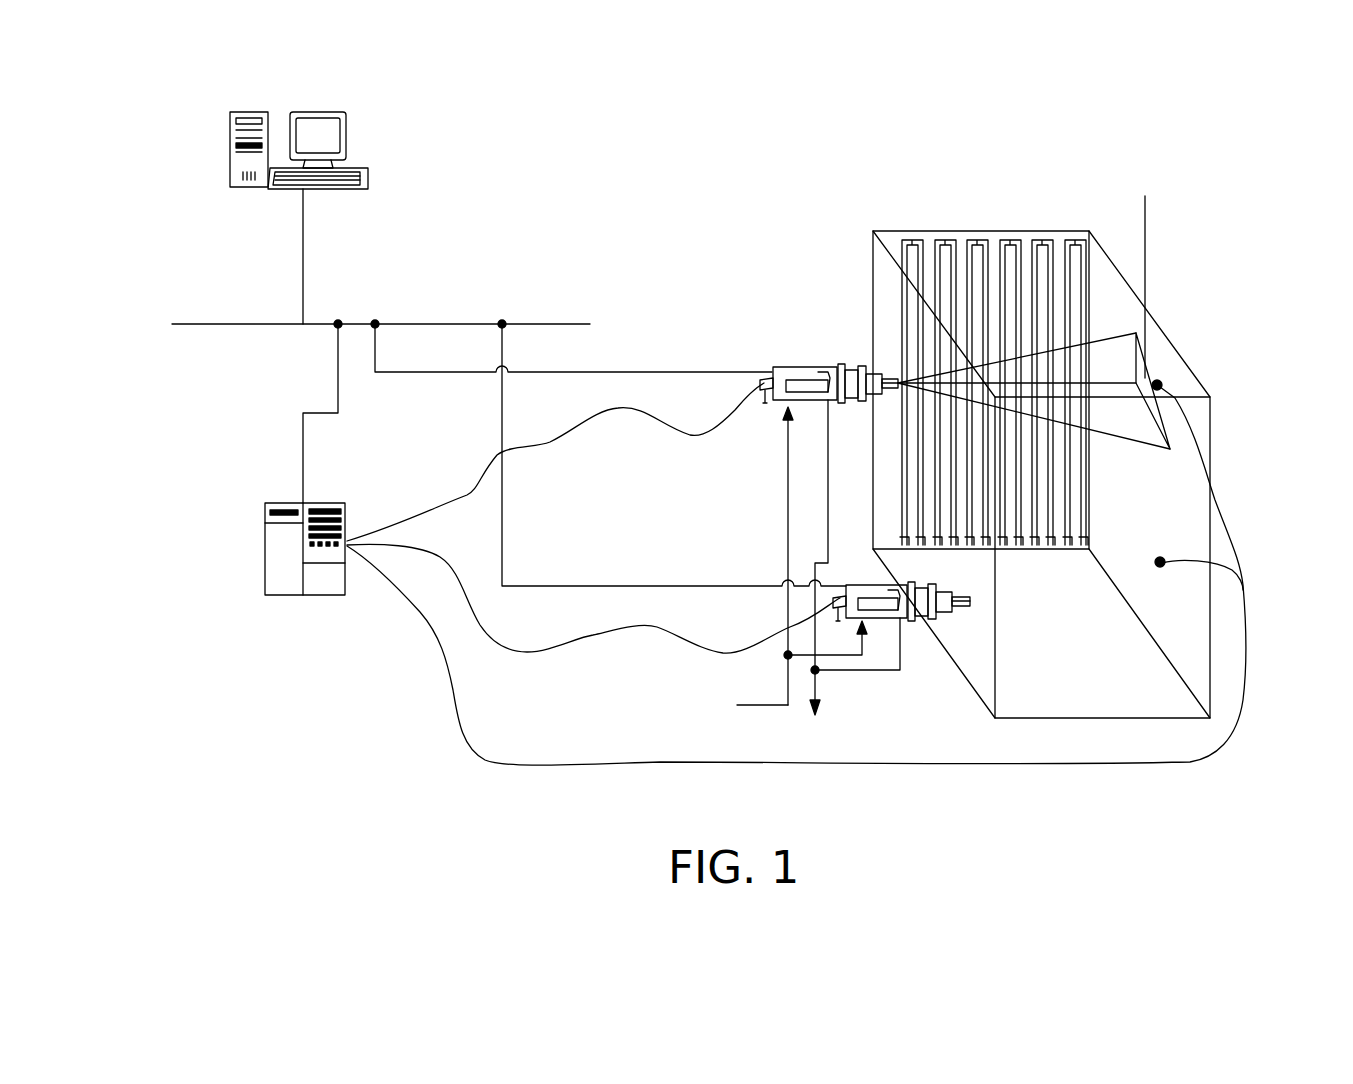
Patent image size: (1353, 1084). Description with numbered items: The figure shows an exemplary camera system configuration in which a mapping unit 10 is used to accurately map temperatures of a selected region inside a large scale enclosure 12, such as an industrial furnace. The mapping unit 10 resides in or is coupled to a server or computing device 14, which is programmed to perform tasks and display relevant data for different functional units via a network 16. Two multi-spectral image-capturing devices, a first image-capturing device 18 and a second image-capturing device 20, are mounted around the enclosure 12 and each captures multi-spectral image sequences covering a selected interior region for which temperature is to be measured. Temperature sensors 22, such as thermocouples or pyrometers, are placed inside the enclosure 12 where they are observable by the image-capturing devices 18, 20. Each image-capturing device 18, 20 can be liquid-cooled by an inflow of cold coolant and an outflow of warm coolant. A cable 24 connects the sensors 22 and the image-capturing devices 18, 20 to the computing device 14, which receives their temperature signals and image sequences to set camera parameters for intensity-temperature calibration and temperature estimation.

The mapping unit 10 is at (232, 150).
The enclosure 12 is at (985, 228).
The computing device 14 is at (305, 597).
The network 16 is at (358, 322).
The first image-capturing device 18 is at (805, 365).
The second image-capturing device 20 is at (848, 582).
The temperature sensor 22 is at (1161, 380).
The cable 24 is at (555, 443).